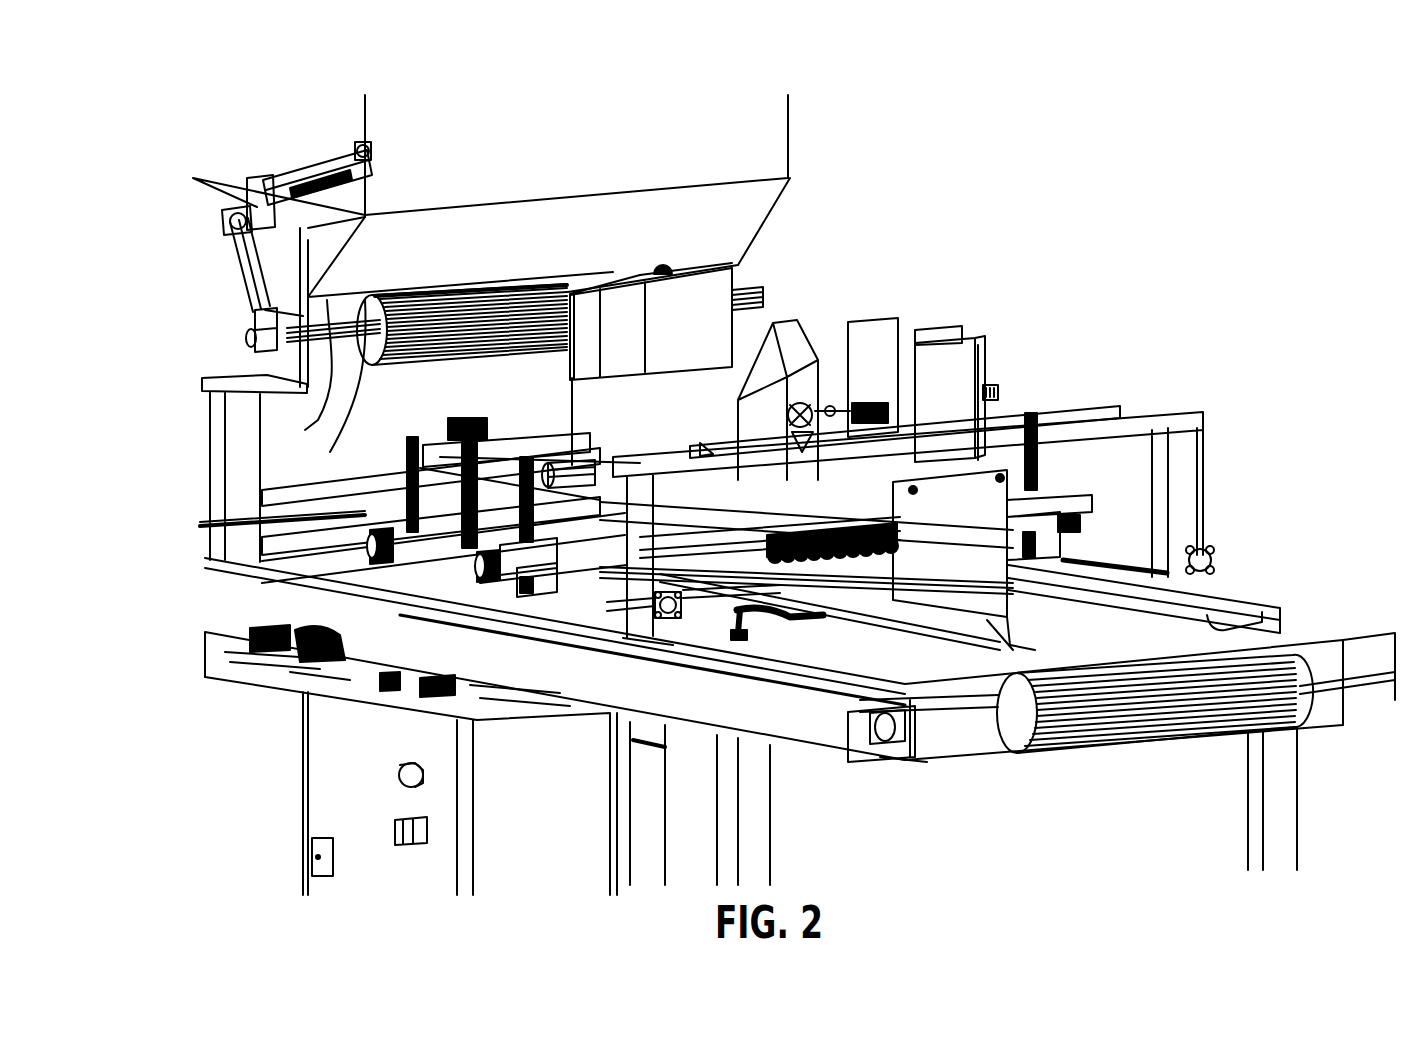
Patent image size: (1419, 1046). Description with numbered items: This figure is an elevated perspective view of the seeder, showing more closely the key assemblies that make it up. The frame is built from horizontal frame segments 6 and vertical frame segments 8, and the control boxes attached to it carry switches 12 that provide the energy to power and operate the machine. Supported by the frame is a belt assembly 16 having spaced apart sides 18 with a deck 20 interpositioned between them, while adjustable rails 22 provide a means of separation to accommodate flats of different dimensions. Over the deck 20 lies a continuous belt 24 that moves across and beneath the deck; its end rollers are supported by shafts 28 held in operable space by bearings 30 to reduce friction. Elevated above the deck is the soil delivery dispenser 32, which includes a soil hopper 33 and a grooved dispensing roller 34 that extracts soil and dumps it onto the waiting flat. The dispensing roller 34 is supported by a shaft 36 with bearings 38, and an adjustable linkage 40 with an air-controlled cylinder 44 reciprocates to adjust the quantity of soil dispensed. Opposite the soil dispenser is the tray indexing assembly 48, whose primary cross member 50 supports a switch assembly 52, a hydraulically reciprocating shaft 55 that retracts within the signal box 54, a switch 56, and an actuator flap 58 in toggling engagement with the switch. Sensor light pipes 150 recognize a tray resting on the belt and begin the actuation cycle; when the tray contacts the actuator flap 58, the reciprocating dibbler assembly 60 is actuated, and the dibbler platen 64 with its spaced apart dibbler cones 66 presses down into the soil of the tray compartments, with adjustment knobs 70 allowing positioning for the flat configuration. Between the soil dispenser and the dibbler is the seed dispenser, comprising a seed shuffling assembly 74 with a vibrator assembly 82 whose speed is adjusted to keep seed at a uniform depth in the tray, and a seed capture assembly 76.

The horizontal frame segments 6 is at (847, 742).
The vertical frame segments 8 is at (730, 870).
The switches 12 is at (300, 647).
The belt assembly 16 is at (1207, 548).
The sides 18 is at (1207, 620).
The deck 20 is at (877, 680).
The adjustable rails 22 is at (1150, 643).
The continuous belt 24 is at (808, 560).
The shafts 28 is at (935, 742).
The bearings 30 is at (1017, 750).
The soil delivery dispenser 32 is at (700, 95).
The soil hopper 33 is at (518, 127).
The dispensing roller 34 is at (410, 347).
The shaft 36 is at (365, 337).
The bearings 38 is at (378, 347).
The adjustable linkage 40 is at (365, 140).
The cylinder 44 is at (368, 213).
The tray indexing assembly 48 is at (975, 330).
The primary cross member 50 is at (1117, 423).
The switch assembly 52 is at (990, 390).
The signal box 54 is at (985, 350).
The hydraulically reciprocating shaft 55 is at (1030, 425).
The switch 56 is at (890, 528).
The actuator flap 58 is at (1050, 530).
The reciprocating dibbler assembly 60 is at (920, 420).
The dibbler platen 64 is at (625, 585).
The dibbler cones 66 is at (773, 643).
The adjustment knobs 70 is at (865, 405).
The seed shuffling assembly 74 is at (587, 360).
The seed capture assembly 76 is at (797, 457).
The vibrator assembly 82 is at (693, 293).
The sensor light pipes 150 is at (737, 538).